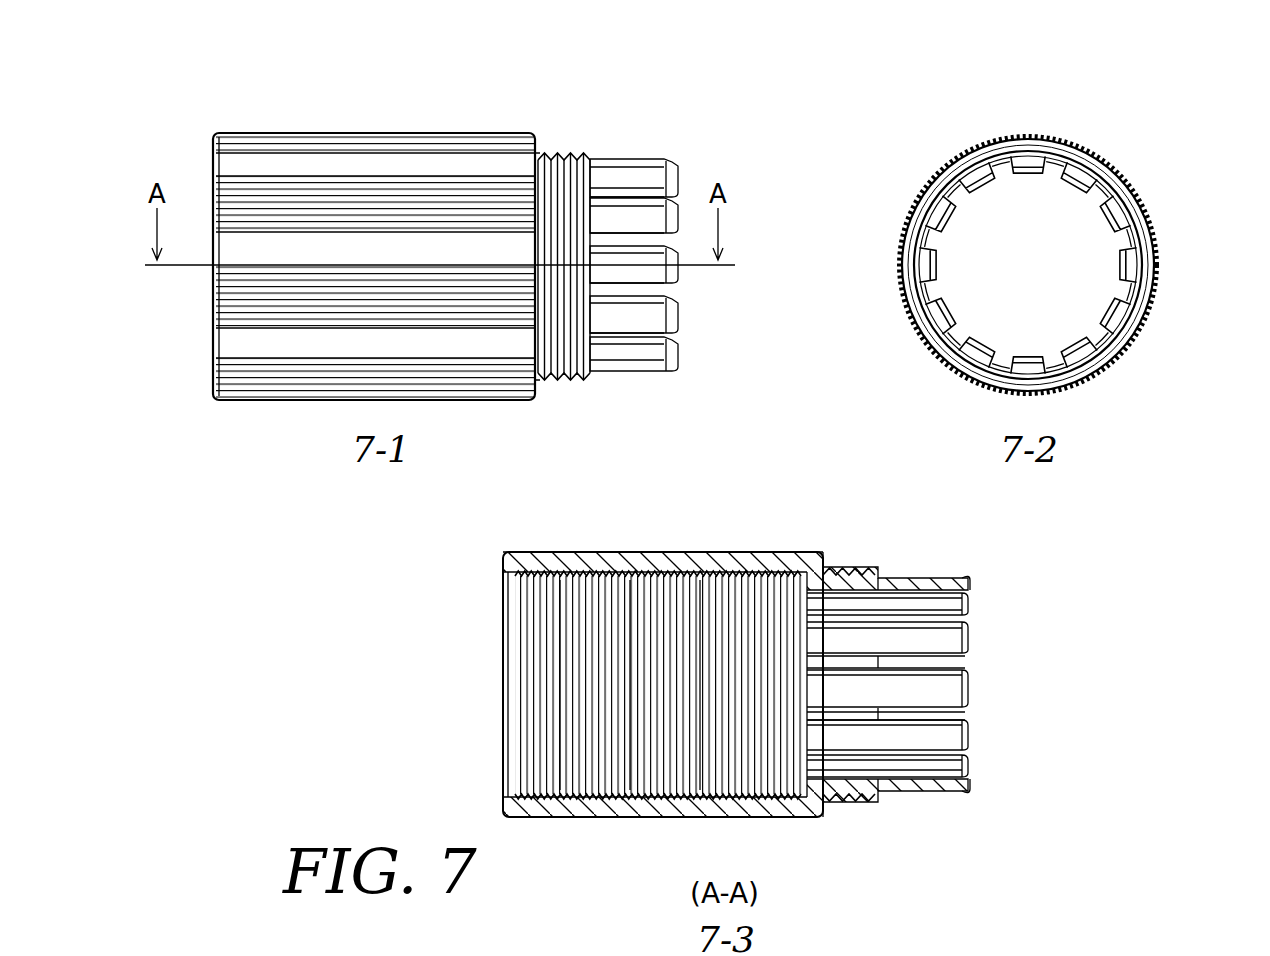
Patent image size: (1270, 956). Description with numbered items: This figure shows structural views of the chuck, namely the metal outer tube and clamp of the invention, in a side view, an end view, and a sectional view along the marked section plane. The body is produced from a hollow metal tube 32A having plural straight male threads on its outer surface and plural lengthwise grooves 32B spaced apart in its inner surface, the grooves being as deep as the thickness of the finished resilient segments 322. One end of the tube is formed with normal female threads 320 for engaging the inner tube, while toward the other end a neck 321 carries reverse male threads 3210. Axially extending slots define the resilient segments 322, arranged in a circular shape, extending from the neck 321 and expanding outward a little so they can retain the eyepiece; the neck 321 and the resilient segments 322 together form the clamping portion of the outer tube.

The hollow metal tube 32A is at (362, 150).
The neck 321 is at (740, 438).
The reverse male threads 3210 is at (558, 170).
The resilient segments 322 is at (615, 178).
The lengthwise grooves 32B is at (650, 193).
The female threads 320 is at (613, 742).